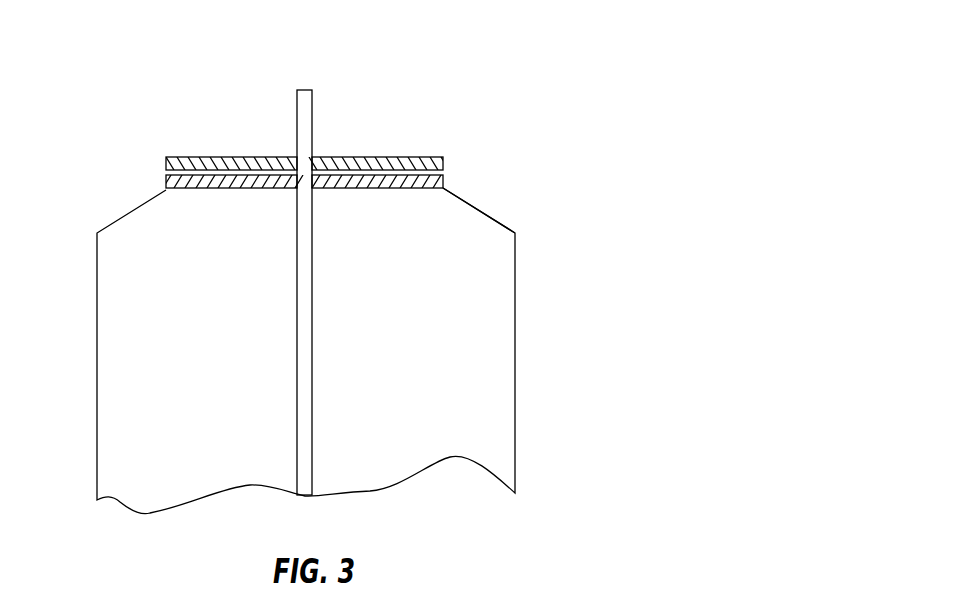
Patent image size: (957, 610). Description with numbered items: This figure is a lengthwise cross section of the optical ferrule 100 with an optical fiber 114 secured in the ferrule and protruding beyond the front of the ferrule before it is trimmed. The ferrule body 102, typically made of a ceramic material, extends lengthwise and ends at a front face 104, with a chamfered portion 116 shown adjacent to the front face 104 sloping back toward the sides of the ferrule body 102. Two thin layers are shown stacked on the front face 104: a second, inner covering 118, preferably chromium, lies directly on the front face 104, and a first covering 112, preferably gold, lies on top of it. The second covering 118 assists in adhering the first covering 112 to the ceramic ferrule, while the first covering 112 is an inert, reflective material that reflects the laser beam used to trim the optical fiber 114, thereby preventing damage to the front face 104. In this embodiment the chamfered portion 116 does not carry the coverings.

The optical ferrule 100 is at (477, 97).
The ferrule body 102 is at (515, 307).
The front face 104 is at (166, 190).
The first covering 112 is at (166, 167).
The optical fiber 114 is at (312, 119).
The chamfered portion 116 is at (480, 210).
The second covering 118 is at (443, 182).